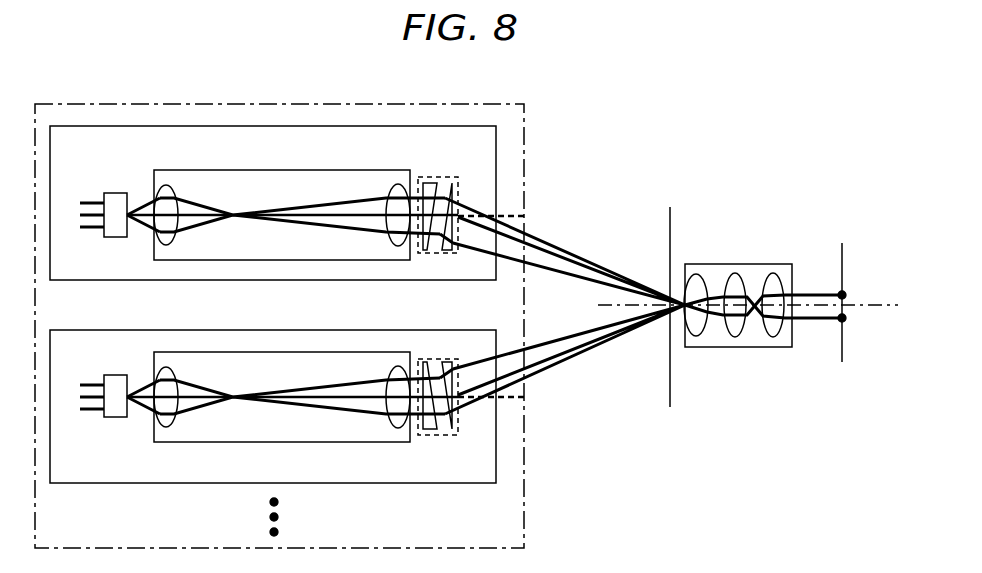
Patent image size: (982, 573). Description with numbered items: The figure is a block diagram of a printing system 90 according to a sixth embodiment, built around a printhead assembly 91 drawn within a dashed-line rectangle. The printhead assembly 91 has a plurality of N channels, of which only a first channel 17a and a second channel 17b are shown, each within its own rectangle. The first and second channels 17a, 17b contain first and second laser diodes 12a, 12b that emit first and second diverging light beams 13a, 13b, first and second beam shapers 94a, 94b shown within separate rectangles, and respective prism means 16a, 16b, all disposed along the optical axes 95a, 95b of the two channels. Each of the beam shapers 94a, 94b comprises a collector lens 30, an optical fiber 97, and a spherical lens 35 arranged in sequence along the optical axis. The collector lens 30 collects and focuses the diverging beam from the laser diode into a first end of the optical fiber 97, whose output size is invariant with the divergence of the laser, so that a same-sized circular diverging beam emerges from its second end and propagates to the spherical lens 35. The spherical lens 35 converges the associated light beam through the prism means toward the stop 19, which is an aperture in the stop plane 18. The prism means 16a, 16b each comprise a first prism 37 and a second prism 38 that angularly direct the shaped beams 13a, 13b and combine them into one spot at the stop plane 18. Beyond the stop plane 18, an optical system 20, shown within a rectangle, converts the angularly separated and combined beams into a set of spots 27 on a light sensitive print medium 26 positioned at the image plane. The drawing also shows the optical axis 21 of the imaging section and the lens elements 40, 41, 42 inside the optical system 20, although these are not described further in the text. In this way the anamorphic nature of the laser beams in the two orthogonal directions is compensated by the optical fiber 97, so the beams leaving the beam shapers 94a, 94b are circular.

The printhead assembly 91 is at (458, 104).
The printing system 90 is at (621, 168).
The first channel 17a is at (113, 280).
The second channel 17b is at (113, 483).
The first beam shaper 94a is at (272, 170).
The second beam shaper 94b is at (270, 443).
The first laser diode 12a is at (104, 196).
The second laser diode 12b is at (112, 418).
The first light beam 13a is at (144, 203).
The second light beam 13b is at (143, 388).
The collector lens 30 is at (163, 243).
The optical fiber 97 is at (273, 218).
The spherical lens 35 is at (397, 248).
The first prism 37 is at (425, 251).
The second prism 38 is at (448, 251).
The first prism means 16a is at (437, 177).
The second prism means 16b is at (433, 436).
The optical axis of first channel 95a is at (508, 214).
The optical axis of second channel 95b is at (513, 398).
The stop 19 is at (657, 322).
The stop plane 18 is at (668, 220).
The optical axis 21 is at (613, 306).
The optical system 20 is at (732, 264).
The lens 40 is at (698, 275).
The lens 41 is at (733, 332).
The lens 42 is at (770, 334).
The print medium 26 is at (843, 256).
The spots 27 is at (845, 298).